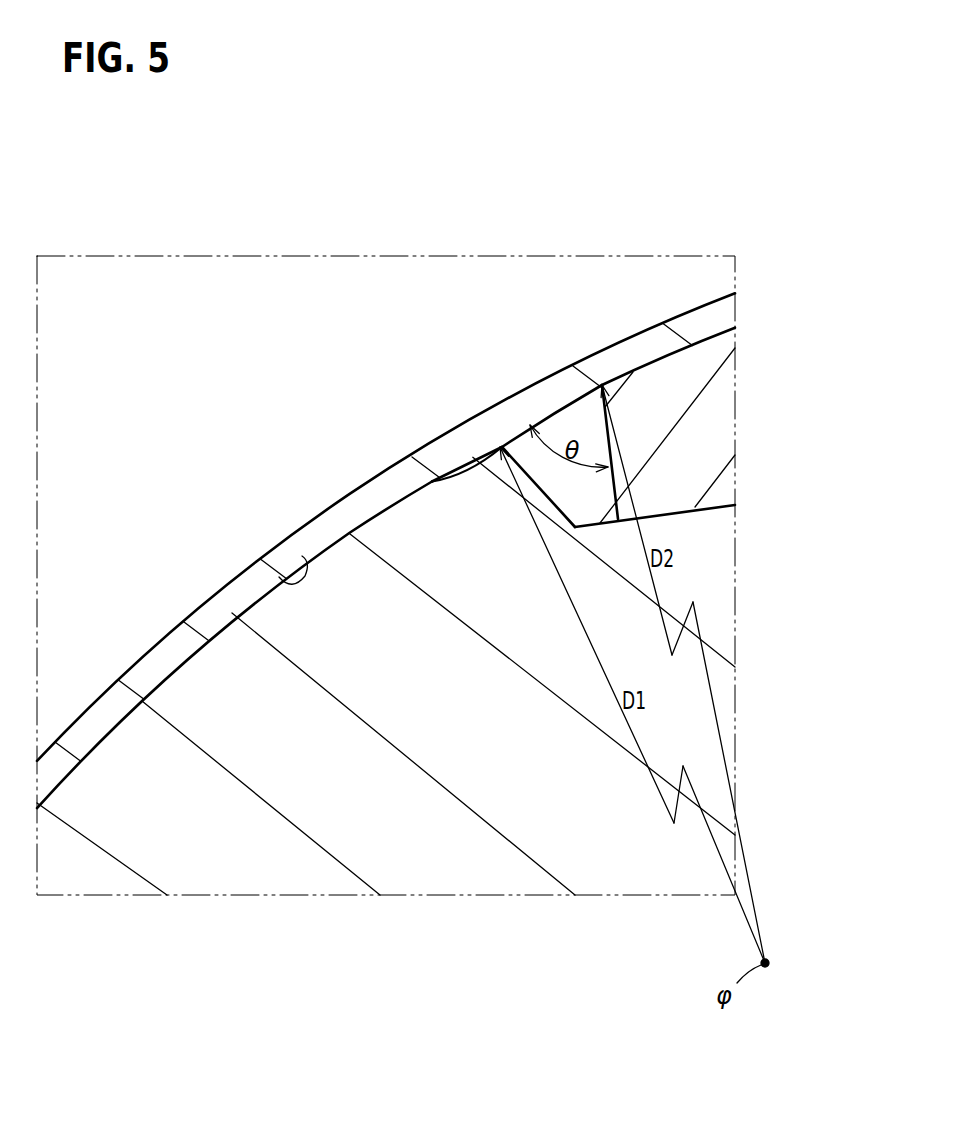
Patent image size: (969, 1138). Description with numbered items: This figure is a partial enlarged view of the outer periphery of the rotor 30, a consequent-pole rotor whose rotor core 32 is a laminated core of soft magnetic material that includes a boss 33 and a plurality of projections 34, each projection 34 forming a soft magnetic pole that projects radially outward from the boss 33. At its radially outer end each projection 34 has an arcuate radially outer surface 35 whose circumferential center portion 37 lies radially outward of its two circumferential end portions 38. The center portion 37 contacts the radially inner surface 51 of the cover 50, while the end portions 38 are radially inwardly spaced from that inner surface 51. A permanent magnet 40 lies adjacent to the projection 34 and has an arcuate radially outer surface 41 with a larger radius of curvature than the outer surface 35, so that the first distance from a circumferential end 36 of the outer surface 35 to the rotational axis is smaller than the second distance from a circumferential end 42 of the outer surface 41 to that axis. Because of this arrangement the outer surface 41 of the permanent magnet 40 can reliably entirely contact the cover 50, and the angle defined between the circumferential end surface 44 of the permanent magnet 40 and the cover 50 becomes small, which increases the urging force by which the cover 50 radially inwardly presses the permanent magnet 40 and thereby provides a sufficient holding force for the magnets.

The rotor 30 is at (210, 588).
The rotor core 32 is at (255, 942).
The boss 33 is at (407, 807).
The projection 34 is at (233, 633).
The radially outer surface 35 is at (110, 721).
The circumferential end 36 is at (500, 445).
The circumferential center portion 37 is at (143, 690).
The circumferential end portion 38 is at (472, 455).
The permanent magnet 40 is at (722, 432).
The radially outer surface 41 is at (716, 335).
The circumferential end 42 is at (601, 384).
The circumferential end surface 44 is at (567, 412).
The cover 50 is at (322, 526).
The radially inner surface 51 is at (279, 577).